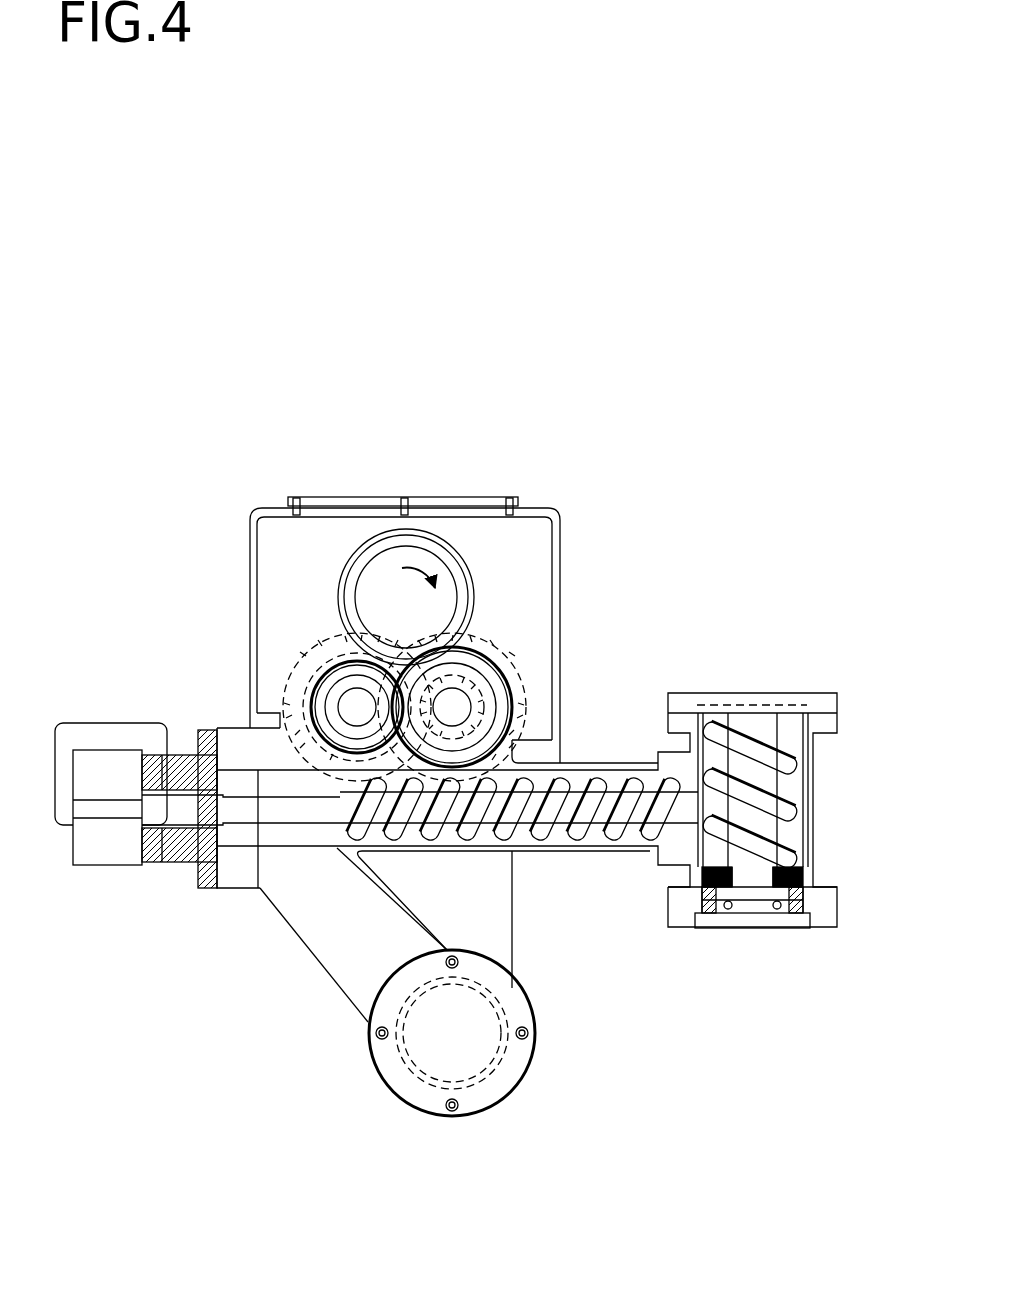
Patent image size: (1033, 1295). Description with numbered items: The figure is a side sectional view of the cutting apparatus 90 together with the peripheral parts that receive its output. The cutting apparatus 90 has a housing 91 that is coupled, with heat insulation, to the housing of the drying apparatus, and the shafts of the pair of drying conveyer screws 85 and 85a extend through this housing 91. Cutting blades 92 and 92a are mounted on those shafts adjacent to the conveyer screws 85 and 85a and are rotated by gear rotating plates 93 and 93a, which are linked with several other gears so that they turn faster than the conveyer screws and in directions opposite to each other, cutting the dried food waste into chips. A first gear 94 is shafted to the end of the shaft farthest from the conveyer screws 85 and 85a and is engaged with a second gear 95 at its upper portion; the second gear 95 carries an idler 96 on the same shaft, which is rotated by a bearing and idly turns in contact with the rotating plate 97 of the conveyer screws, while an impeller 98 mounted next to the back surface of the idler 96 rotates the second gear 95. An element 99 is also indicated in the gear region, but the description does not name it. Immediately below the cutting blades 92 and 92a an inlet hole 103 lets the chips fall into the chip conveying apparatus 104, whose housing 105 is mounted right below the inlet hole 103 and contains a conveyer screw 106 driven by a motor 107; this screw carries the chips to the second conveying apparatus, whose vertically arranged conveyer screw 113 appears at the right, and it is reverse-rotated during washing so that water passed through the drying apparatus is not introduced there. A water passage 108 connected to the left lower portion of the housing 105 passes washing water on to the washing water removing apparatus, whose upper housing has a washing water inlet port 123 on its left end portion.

The cutting apparatus 90 is at (343, 488).
The housing 91 is at (558, 553).
The cutting blade 92 is at (468, 745).
The cutting blade 92a is at (297, 720).
The gear rotating plate 93 is at (500, 690).
The gear rotating plate 93a is at (392, 697).
The first gear 94 is at (505, 705).
The second gear 95 is at (452, 580).
The idler 96 is at (410, 537).
The rotating plate 97 is at (490, 667).
The impeller 98 is at (430, 550).
The gear hub 99 is at (330, 670).
The drying conveyer screw 85 is at (455, 695).
The drying conveyer screw 85a is at (352, 698).
The inlet hole 103 is at (263, 808).
The chip conveying apparatus 104 is at (429, 856).
The housing 105 is at (462, 850).
The conveyer screw 106 is at (592, 846).
The motor 107 is at (112, 848).
The water passage 108 is at (322, 970).
The conveyer screw 113 is at (813, 770).
The washing water inlet port 123 is at (440, 1066).